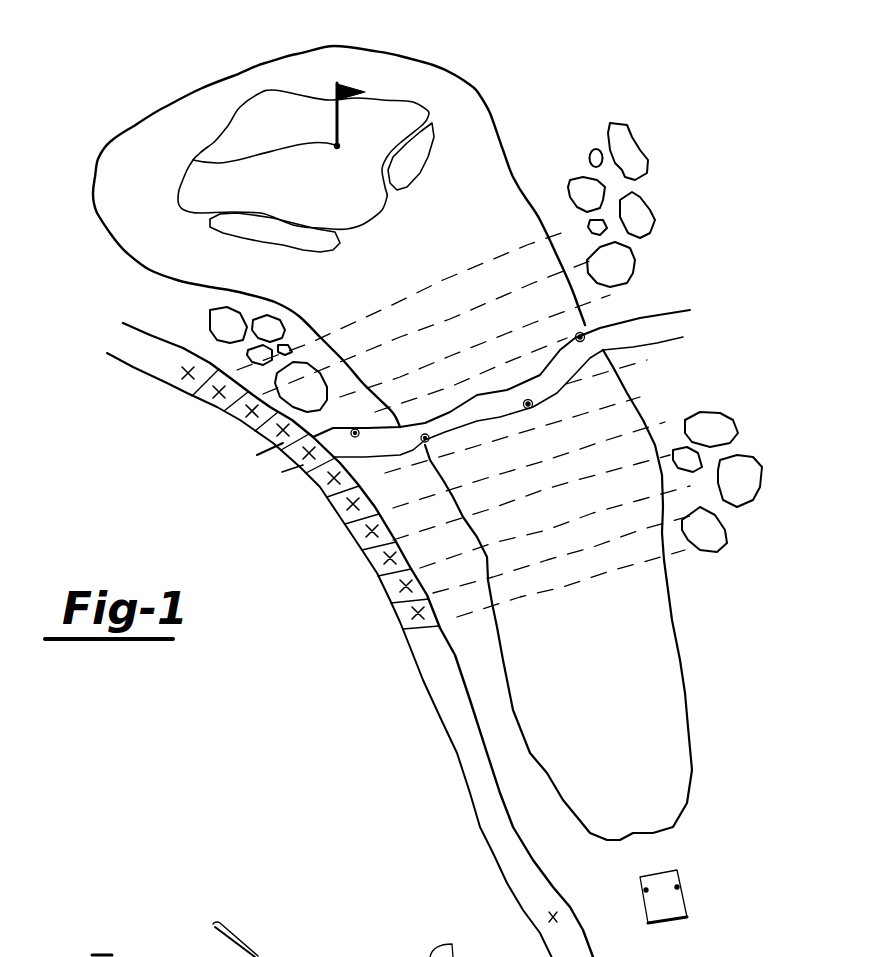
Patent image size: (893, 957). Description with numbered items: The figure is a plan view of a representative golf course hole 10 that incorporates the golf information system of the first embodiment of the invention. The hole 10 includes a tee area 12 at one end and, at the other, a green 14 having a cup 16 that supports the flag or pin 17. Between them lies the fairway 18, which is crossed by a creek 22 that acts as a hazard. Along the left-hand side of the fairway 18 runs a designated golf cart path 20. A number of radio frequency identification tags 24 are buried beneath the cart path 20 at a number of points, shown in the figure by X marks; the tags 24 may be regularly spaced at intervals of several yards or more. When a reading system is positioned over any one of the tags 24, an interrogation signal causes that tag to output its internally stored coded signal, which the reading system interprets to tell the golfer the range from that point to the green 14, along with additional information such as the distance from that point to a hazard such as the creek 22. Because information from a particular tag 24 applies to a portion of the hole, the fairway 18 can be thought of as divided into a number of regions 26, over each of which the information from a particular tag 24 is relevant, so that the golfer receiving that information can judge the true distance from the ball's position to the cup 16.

The golf course hole 10 is at (508, 160).
The tee area 12 is at (680, 887).
The green 14 is at (428, 118).
The cup 16 is at (193, 160).
The flag or pin 17 is at (327, 120).
The fairway 18 is at (680, 648).
The golf cart path 20 is at (397, 610).
The creek 22 is at (683, 337).
The radio frequency identification tags 24 is at (412, 616).
The regions 26 is at (640, 394).